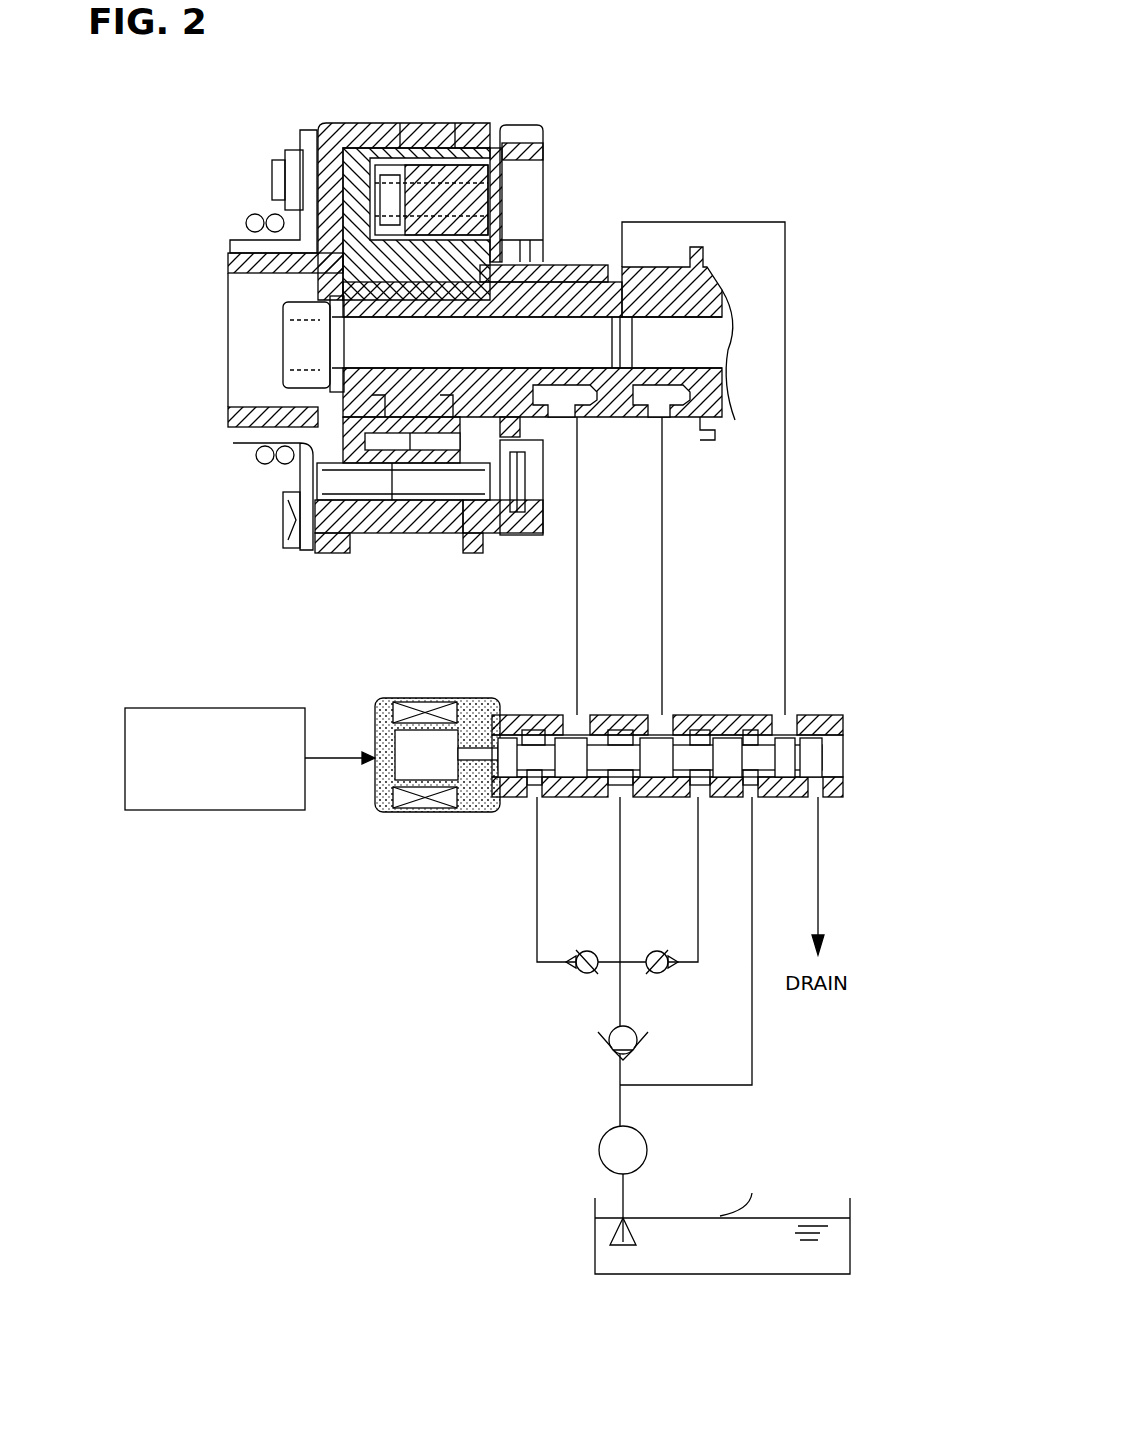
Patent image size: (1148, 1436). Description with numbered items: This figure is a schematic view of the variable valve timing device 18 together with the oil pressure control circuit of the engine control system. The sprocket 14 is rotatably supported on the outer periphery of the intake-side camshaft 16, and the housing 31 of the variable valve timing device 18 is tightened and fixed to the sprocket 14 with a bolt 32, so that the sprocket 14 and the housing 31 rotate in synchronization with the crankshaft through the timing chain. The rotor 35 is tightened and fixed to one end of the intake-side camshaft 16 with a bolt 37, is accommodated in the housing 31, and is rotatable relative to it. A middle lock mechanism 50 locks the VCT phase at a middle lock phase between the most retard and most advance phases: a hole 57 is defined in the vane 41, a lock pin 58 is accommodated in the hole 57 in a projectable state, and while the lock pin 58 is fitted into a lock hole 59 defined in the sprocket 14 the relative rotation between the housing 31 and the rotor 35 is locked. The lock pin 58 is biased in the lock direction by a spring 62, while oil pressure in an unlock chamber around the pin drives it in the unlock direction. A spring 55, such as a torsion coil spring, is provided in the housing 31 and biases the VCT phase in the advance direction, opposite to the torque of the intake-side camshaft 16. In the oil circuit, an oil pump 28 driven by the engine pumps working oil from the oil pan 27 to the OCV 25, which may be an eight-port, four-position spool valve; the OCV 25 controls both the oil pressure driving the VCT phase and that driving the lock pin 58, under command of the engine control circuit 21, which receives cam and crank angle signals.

The sprocket 14 is at (548, 140).
The intake-side camshaft 16 is at (660, 270).
The variable valve timing device 18 is at (330, 118).
The engine control circuit 21 is at (180, 708).
The OCV 25 is at (835, 715).
The oil pan 27 is at (850, 1237).
The oil pump 28 is at (599, 1146).
The housing 31 is at (403, 122).
The bolt 32 is at (545, 490).
The rotor 35 is at (340, 240).
The bolt 37 is at (283, 342).
The vane 41 is at (358, 130).
The middle lock mechanism 50 is at (443, 135).
The spring 55 is at (265, 470).
The hole 57 is at (318, 125).
The lock pin 58 is at (490, 212).
The lock hole 59 is at (492, 148).
The spring 62 is at (385, 300).